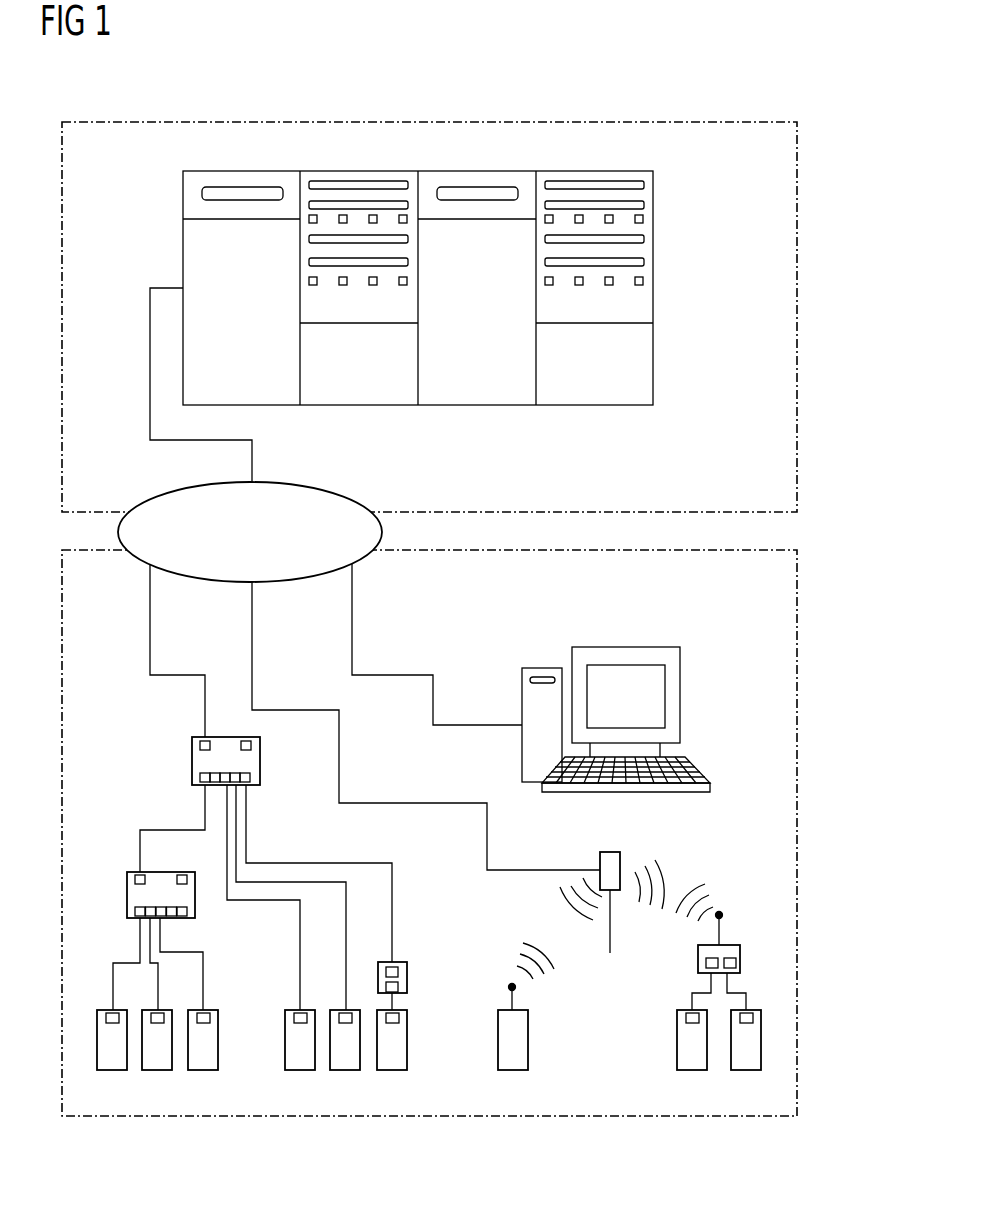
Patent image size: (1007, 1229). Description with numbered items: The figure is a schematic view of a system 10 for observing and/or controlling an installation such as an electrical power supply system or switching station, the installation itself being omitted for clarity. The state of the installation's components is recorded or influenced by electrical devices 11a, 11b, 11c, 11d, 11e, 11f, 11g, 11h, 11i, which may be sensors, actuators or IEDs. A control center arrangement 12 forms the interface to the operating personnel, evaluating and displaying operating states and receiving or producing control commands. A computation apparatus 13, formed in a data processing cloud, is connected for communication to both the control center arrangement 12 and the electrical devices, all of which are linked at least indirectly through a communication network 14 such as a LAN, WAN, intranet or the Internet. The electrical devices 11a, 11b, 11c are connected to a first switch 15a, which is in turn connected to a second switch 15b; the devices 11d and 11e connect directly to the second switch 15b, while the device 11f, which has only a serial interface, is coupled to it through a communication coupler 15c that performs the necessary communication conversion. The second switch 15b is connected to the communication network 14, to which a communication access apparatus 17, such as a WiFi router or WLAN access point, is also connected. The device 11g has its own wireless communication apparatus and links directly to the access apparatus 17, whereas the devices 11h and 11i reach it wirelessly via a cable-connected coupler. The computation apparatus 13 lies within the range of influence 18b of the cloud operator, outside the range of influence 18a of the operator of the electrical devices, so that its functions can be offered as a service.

The system 10 is at (470, 624).
The electrical device 11a is at (112, 1070).
The electrical device 11b is at (157, 1070).
The electrical device 11c is at (203, 1070).
The electrical device 11d is at (300, 1070).
The electrical device 11e is at (345, 1070).
The electrical device 11f is at (392, 1070).
The electrical device 11g is at (513, 1070).
The electrical device 11h is at (692, 1070).
The electrical device 11i is at (746, 1070).
The control center arrangement 12 is at (680, 698).
The computation apparatus 13 is at (653, 300).
The communication network 14 is at (315, 487).
The first switch 15a is at (135, 872).
The second switch 15b is at (192, 760).
The communication coupler 15c is at (407, 980).
The communication access apparatus 17 is at (620, 860).
The range of influence 18a is at (607, 1118).
The range of influence 18b is at (605, 122).